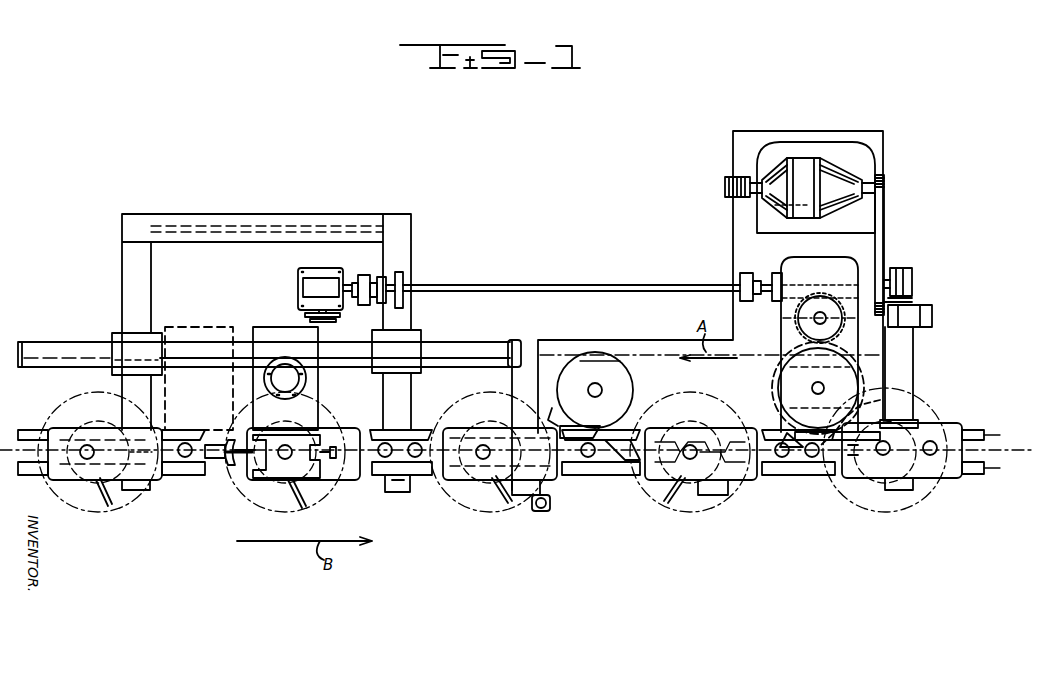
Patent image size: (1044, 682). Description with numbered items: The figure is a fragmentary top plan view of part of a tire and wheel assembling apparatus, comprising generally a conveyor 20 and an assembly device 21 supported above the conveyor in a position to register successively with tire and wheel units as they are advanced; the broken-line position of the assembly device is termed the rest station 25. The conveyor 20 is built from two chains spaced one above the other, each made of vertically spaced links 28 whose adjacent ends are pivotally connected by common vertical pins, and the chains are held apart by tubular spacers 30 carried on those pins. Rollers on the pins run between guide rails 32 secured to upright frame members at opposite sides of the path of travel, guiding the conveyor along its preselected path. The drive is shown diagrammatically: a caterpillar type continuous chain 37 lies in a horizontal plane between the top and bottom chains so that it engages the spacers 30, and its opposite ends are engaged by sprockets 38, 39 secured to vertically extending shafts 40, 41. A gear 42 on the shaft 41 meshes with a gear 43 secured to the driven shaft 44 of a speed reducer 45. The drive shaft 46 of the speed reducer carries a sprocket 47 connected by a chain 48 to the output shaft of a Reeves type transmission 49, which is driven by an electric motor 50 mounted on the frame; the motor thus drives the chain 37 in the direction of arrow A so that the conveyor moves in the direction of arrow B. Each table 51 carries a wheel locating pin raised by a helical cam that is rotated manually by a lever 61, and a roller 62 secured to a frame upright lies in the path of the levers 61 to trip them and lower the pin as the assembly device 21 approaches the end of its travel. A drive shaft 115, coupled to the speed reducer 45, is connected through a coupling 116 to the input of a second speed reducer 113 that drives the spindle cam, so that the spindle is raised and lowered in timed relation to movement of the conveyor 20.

The conveyor 20 is at (199, 484).
The assembly device 21 is at (165, 328).
The rest station 25 is at (214, 324).
The links 28 is at (1008, 452).
The tubular spacers 30 is at (590, 458).
The guide rails 32 is at (177, 430).
The caterpillar type continuous chain 37 is at (637, 353).
The sprocket 38 is at (588, 364).
The sprocket 39 is at (855, 377).
The shaft 40 is at (602, 390).
The shaft 41 is at (792, 392).
The gear 42 is at (870, 393).
The gear 43 is at (840, 330).
The driven shaft 44 is at (813, 315).
The speed reducer 45 is at (853, 266).
The drive shaft 46 is at (882, 270).
The sprocket 47 is at (884, 280).
The chain 48 is at (881, 240).
The Reeves type transmission 49 is at (866, 176).
The electric motor 50 is at (780, 216).
The tables 51 is at (76, 496).
The lever 61 is at (105, 492).
The roller 62 is at (542, 512).
The speed reducer 113 is at (305, 286).
The drive shaft 115 is at (535, 291).
The coupling 116 is at (364, 276).